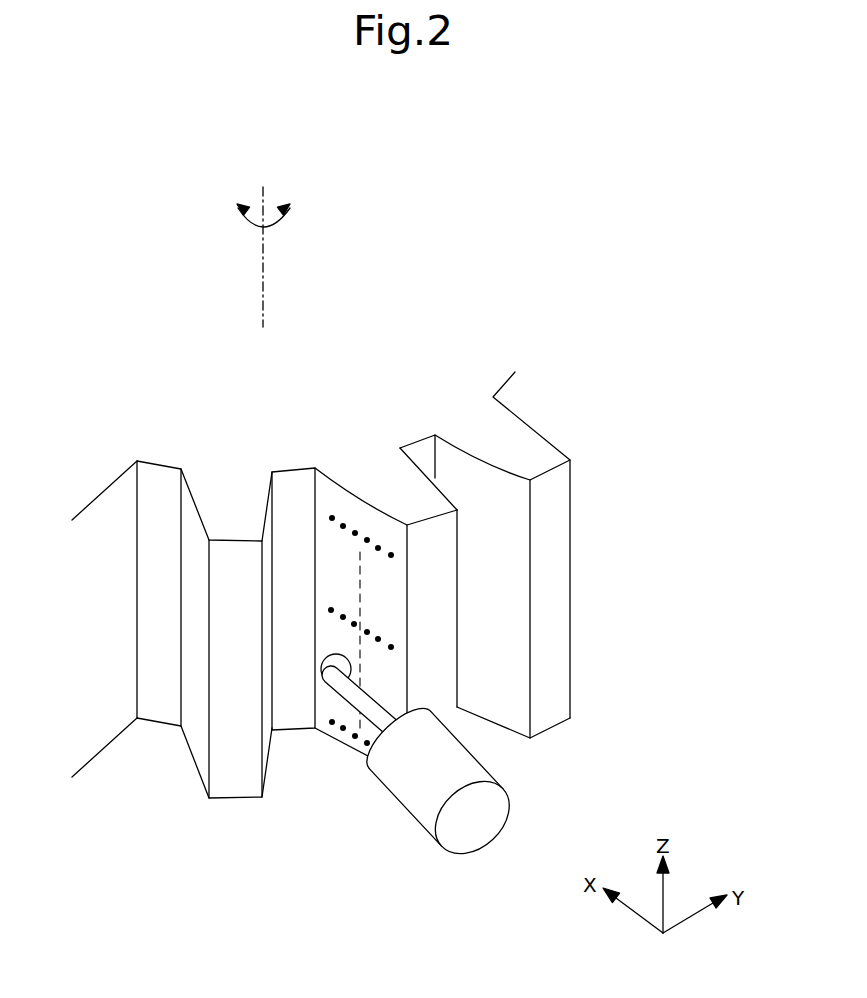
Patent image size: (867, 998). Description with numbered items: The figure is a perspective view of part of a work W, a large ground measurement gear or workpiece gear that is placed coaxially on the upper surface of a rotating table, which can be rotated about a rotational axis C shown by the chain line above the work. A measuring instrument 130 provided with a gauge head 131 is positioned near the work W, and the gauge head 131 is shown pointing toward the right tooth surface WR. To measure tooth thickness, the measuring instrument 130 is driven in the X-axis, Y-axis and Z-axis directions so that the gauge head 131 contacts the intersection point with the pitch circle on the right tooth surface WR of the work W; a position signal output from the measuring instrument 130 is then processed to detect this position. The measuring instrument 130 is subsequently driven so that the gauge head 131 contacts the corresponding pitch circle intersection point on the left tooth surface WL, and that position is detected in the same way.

The work W is at (345, 585).
The right tooth surface WR is at (342, 503).
The left tooth surface WL is at (426, 462).
The rotational axis C is at (263, 246).
The measuring instrument 130 is at (414, 808).
The gauge head 131 is at (322, 680).